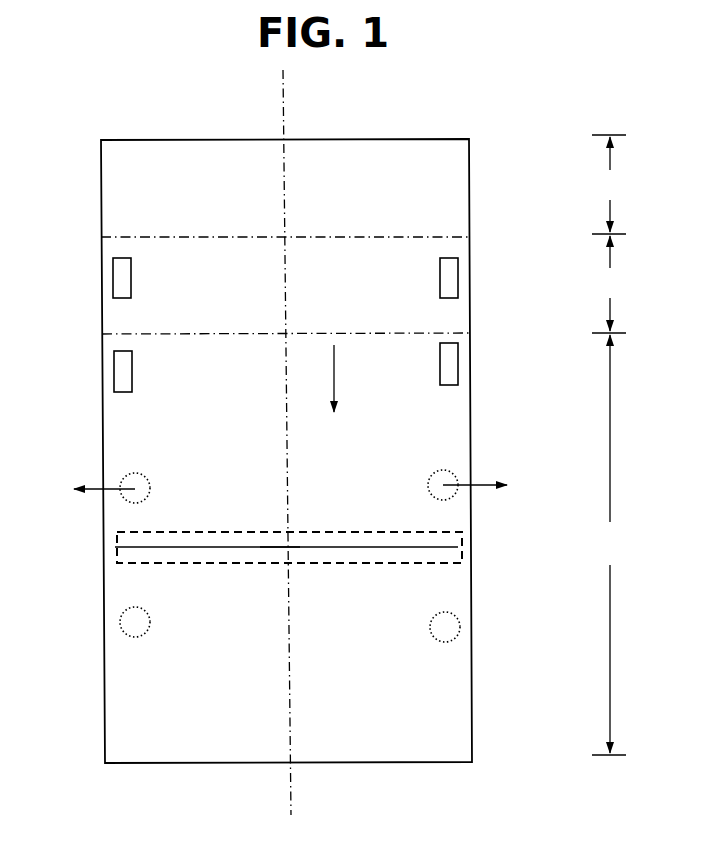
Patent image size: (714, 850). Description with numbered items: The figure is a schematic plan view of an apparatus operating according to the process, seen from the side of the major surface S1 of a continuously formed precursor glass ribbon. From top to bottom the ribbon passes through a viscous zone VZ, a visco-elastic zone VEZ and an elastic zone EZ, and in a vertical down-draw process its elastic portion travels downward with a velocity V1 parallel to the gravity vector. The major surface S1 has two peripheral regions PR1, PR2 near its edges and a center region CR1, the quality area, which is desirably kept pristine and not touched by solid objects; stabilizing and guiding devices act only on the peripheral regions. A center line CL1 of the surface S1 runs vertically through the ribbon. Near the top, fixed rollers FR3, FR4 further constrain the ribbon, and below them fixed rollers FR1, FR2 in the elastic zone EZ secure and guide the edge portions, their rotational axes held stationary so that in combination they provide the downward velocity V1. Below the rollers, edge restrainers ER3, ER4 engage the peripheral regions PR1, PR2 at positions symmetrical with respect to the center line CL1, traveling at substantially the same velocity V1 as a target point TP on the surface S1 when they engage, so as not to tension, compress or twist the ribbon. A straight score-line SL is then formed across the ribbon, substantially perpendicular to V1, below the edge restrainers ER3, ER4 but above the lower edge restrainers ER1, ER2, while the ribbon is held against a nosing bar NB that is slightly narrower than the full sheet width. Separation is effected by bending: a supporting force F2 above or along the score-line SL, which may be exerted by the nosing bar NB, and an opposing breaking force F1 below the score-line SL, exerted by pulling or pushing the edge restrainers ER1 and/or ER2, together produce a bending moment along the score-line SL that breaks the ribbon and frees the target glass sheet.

The center line CL1 is at (269, 442).
The fixed roller FR1 is at (122, 365).
The fixed roller FR2 is at (457, 360).
The fixed roller FR3 is at (122, 275).
The fixed roller FR4 is at (456, 278).
The edge restrainer ER1 is at (131, 621).
The edge restrainer ER2 is at (463, 626).
The edge restrainer ER3 is at (121, 477).
The edge restrainer ER4 is at (456, 477).
The breaking force F1 is at (91, 490).
The supporting force F2 is at (487, 486).
The major surface S1 is at (190, 374).
The downward velocity V1 is at (318, 378).
The peripheral region PR1 is at (128, 426).
The peripheral region PR2 is at (445, 426).
The center region CR1 is at (264, 434).
The score-line SL is at (244, 531).
The target point TP is at (279, 543).
The nosing bar NB is at (421, 528).
The viscous zone VZ is at (609, 184).
The visco-elastic zone VEZ is at (608, 284).
The elastic zone EZ is at (609, 545).